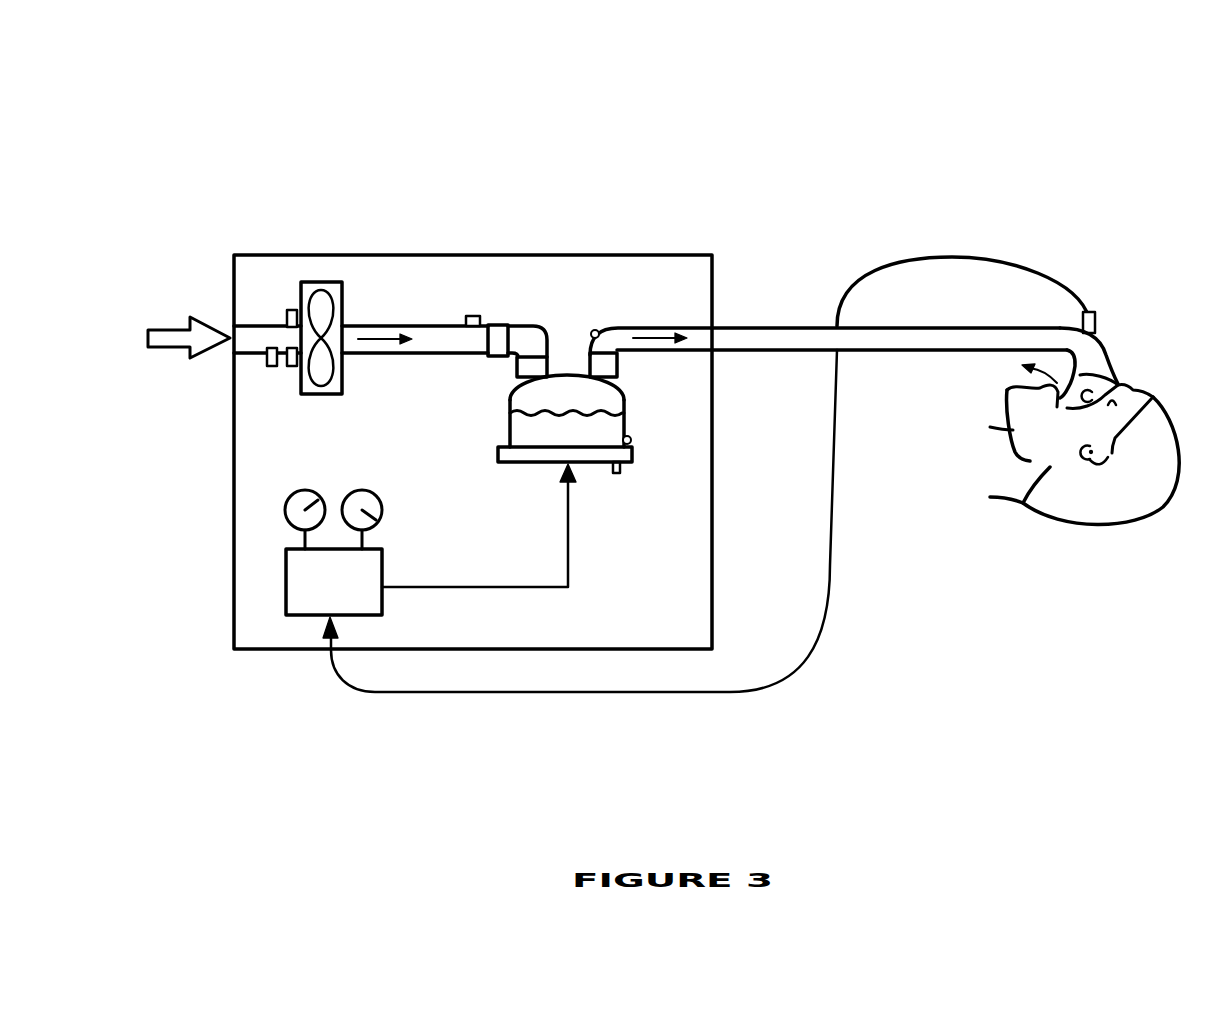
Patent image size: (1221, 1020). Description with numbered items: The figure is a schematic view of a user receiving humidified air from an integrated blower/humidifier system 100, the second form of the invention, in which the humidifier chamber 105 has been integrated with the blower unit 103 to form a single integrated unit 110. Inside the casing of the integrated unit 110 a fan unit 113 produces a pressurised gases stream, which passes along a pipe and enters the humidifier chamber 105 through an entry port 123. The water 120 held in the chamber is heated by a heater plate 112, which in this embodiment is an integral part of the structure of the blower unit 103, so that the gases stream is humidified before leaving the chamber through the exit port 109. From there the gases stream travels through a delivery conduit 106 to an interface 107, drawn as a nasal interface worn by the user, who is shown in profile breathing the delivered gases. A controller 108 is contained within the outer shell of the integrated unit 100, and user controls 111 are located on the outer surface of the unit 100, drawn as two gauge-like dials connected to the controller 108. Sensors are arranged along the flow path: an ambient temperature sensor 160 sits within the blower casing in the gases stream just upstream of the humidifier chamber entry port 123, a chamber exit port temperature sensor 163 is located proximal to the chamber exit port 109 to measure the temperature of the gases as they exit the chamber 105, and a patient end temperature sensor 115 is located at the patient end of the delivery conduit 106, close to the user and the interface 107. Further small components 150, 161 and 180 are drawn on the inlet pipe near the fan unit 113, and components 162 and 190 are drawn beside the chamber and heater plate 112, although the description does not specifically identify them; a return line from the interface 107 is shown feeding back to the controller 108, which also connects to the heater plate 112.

The integrated blower/humidifier system 100 is at (735, 150).
The blower unit 103 is at (382, 255).
The humidifier chamber 105 is at (624, 400).
The delivery conduit 106 is at (886, 352).
The interface 107 is at (1120, 380).
The controller 108 is at (293, 598).
The exit port 109 is at (618, 368).
The integrated unit 110 is at (618, 350).
The user controls 111 is at (284, 515).
The heater plate 112 is at (634, 456).
The fan unit 113 is at (323, 284).
The patient end temperature sensor 115 is at (1093, 313).
The water 120 is at (518, 427).
The entry port 123 is at (514, 410).
The inlet flow sensor 150 is at (288, 310).
The ambient temperature sensor 160 is at (472, 316).
The temperature sensor 161 is at (267, 360).
The heater plate temperature sensor 162 is at (622, 472).
The chamber exit port temperature sensor 163 is at (594, 328).
The humidity sensor 180 is at (287, 365).
The chamber sensor 190 is at (637, 440).